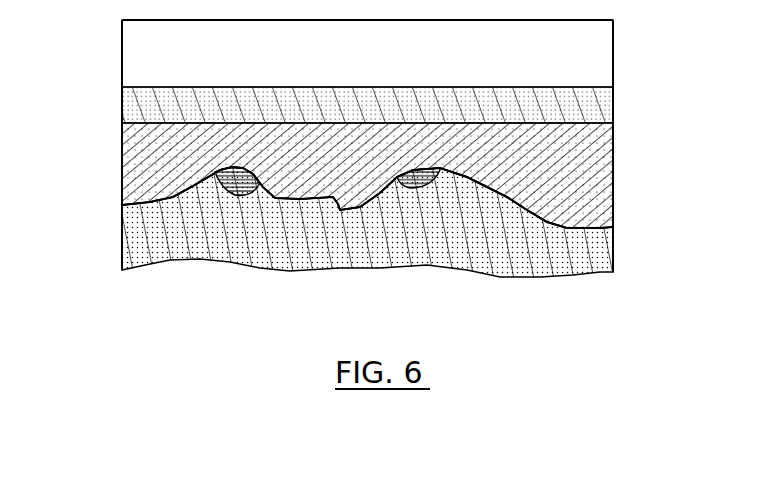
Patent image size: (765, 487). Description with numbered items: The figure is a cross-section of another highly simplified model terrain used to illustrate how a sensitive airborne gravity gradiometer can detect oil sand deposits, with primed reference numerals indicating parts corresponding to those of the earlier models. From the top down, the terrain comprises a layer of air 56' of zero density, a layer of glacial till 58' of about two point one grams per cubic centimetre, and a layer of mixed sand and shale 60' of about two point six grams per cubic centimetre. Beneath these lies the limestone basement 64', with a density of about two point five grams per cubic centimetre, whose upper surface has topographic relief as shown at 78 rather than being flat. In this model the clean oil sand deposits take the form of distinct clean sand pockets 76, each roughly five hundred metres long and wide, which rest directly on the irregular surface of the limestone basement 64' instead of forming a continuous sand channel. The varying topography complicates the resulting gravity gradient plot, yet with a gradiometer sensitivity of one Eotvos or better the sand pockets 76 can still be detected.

The layer of air 56' is at (403, 53).
The layer of glacial till 58' is at (403, 105).
The layer of mixed sand and shale 60' is at (403, 175).
The limestone basement 64' is at (403, 222).
The clean sand pockets 76 is at (237, 266).
The topographic relief 78 is at (121, 178).